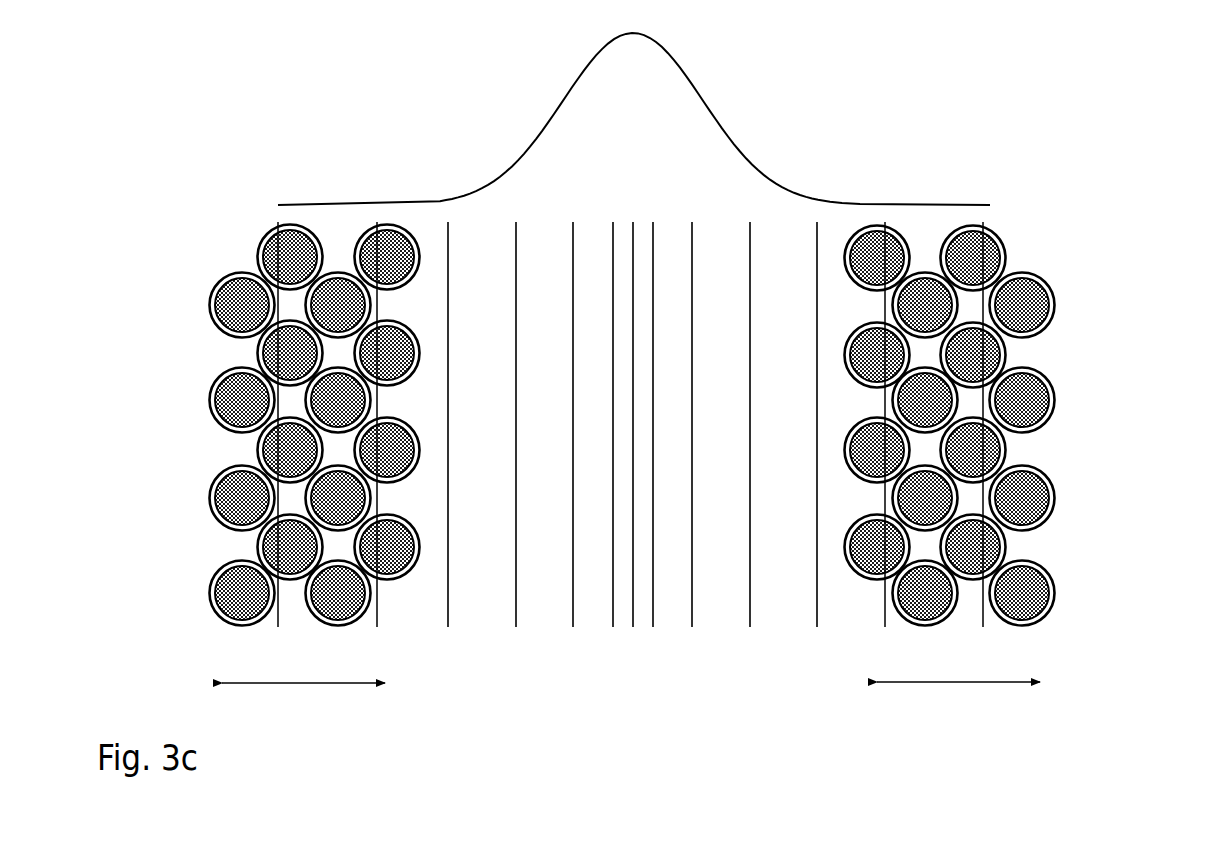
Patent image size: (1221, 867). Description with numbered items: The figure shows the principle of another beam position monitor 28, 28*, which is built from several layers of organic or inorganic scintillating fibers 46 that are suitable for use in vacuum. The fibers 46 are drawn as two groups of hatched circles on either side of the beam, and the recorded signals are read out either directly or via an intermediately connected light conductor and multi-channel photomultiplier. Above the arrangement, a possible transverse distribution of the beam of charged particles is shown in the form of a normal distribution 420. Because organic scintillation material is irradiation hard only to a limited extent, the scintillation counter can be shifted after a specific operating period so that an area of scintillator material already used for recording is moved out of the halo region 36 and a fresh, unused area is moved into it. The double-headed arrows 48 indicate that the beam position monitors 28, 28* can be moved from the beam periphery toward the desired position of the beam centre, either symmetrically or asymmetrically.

The normal distribution 420 is at (687, 78).
The scintillating fibers 46 is at (1033, 273).
The halo region 36 is at (420, 702).
The double-headed arrows 48 is at (1010, 683).
The beam position monitor 28 is at (1112, 638).